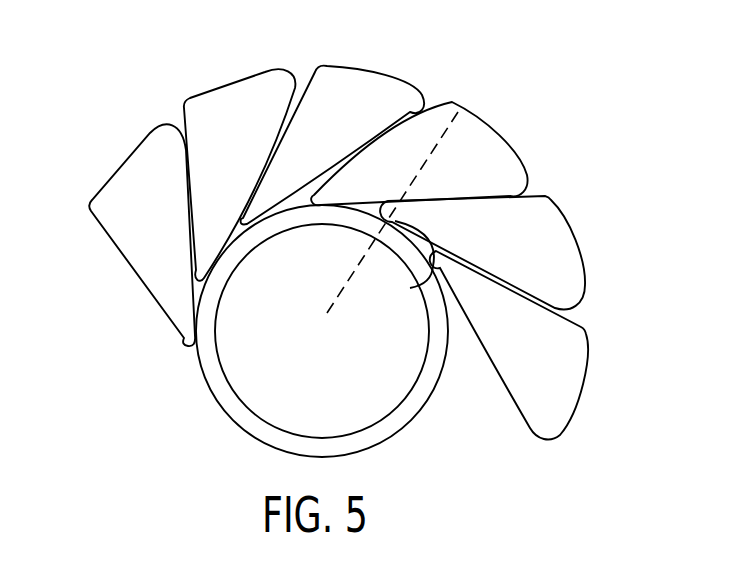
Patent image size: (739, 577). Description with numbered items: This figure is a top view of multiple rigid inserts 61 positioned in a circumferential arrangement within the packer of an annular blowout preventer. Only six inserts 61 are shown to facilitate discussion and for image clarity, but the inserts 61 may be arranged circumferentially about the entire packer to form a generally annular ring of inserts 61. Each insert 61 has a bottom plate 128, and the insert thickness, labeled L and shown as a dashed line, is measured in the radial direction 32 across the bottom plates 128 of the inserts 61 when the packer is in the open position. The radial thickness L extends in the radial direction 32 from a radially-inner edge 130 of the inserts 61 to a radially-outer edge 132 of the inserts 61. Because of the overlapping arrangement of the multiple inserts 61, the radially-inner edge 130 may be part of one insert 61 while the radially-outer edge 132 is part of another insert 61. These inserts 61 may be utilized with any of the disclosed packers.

The radial axis or direction 32 is at (347, 281).
The insert 61 is at (661, 200).
The bottom plate 128 is at (358, 78).
The radially-inner edge 130 is at (418, 268).
The radially-outer edge 132 is at (514, 168).